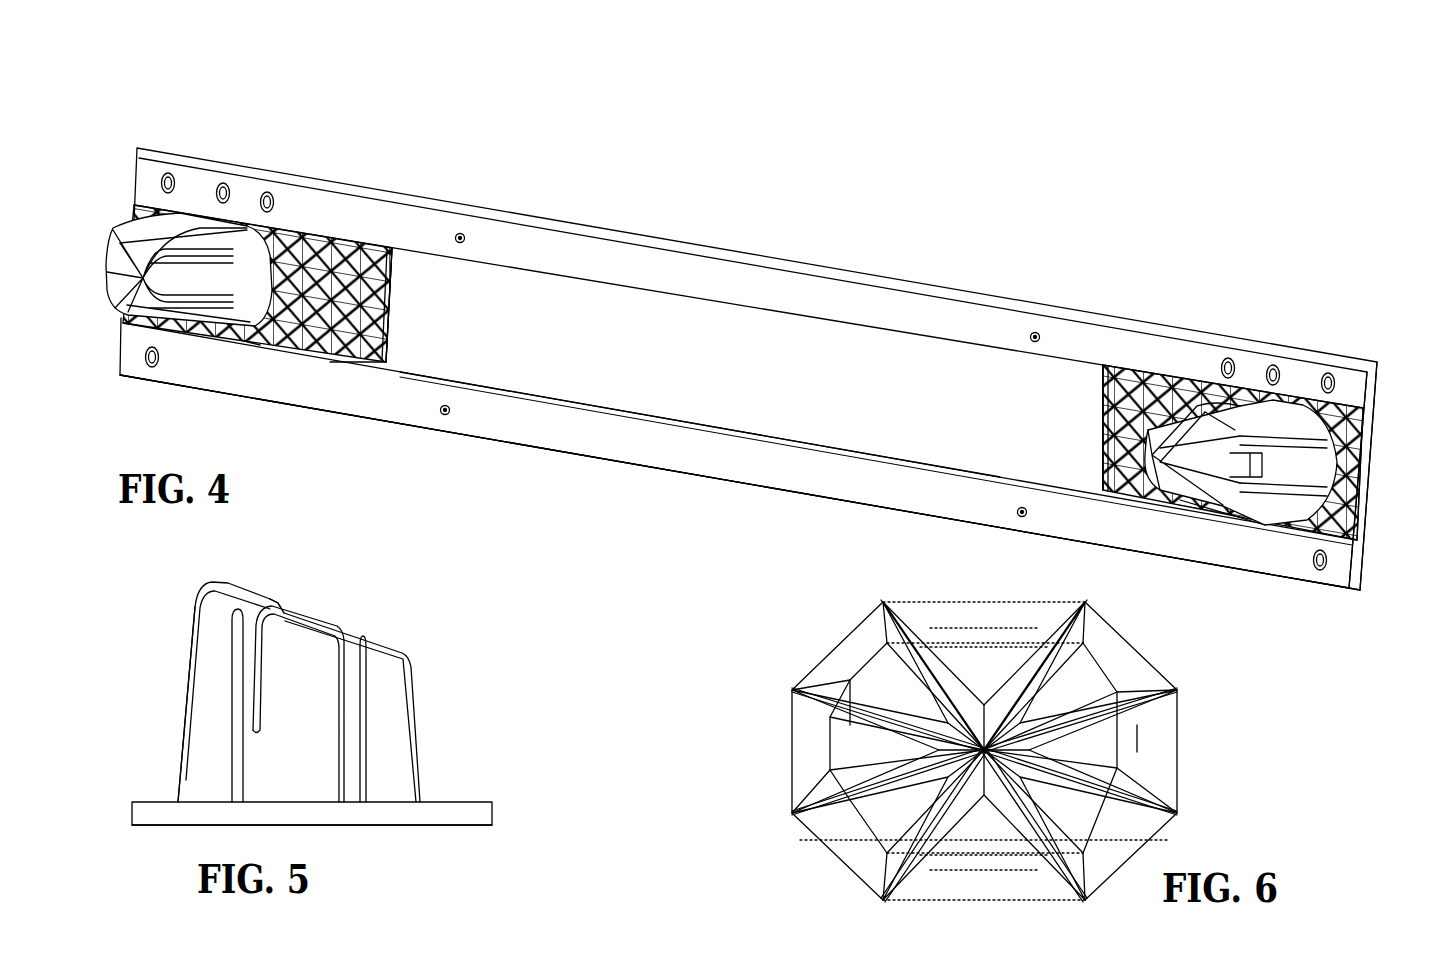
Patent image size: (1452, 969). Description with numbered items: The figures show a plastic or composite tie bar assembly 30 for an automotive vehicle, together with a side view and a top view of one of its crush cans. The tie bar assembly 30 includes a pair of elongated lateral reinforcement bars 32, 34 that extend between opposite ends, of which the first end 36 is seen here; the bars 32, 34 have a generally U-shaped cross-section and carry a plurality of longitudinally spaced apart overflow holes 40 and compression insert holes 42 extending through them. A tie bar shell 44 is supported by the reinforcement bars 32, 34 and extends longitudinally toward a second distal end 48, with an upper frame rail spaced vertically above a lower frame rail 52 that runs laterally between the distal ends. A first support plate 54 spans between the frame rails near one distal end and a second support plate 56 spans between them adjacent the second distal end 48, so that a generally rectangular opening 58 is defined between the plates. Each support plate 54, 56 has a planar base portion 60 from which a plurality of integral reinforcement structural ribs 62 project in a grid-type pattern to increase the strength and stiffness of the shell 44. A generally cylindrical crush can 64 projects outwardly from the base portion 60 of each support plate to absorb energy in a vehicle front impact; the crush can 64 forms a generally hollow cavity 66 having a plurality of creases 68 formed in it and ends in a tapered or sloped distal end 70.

In FIG. 4, the tie bar assembly 30 is at (1076, 150).
In FIG. 4, the lateral reinforcement bar 32 is at (757, 271).
In FIG. 4, the lateral reinforcement bar 34 is at (725, 430).
In FIG. 4, the first end 36 is at (1372, 385).
In FIG. 4, the overflow hole 40 is at (133, 190).
In FIG. 4, the compression insert hole 42 is at (233, 190).
In FIG. 4, the tie bar shell 44 is at (320, 227).
In FIG. 4, the second distal end 48 is at (1377, 470).
In FIG. 4, the lower frame rail 52 is at (1172, 547).
In FIG. 4, the first support plate 54 is at (398, 278).
In FIG. 5, the first support plate 54 is at (493, 817).
In FIG. 4, the second support plate 56 is at (1100, 407).
In FIG. 4, the rectangular opening 58 is at (562, 385).
In FIG. 4, the planar base portion 60 is at (330, 365).
In FIG. 5, the planar base portion 60 is at (422, 822).
In FIG. 4, the reinforcement structural rib 62 is at (268, 350).
In FIG. 4, the crush can 64 is at (1283, 418).
In FIG. 5, the crush can 64 is at (418, 740).
In FIG. 6, the crush can 64 is at (1182, 767).
In FIG. 5, the hollow cavity 66 is at (193, 655).
In FIG. 6, the crease 68 is at (923, 640).
In FIG. 5, the tapered distal end 70 is at (355, 630).